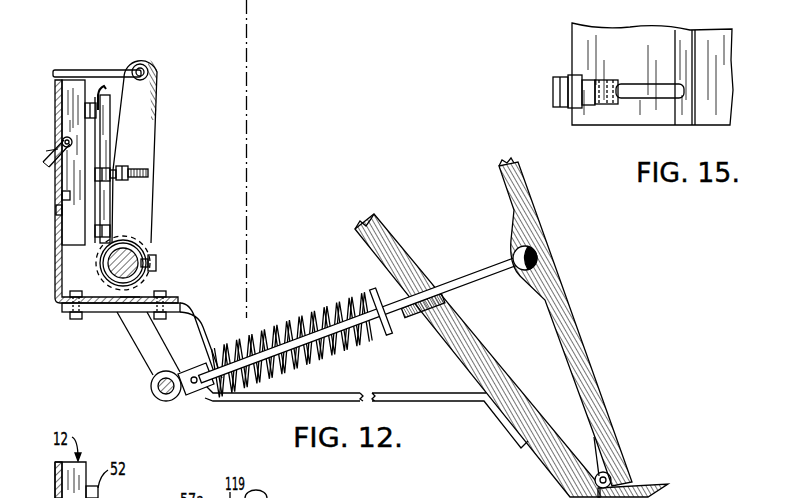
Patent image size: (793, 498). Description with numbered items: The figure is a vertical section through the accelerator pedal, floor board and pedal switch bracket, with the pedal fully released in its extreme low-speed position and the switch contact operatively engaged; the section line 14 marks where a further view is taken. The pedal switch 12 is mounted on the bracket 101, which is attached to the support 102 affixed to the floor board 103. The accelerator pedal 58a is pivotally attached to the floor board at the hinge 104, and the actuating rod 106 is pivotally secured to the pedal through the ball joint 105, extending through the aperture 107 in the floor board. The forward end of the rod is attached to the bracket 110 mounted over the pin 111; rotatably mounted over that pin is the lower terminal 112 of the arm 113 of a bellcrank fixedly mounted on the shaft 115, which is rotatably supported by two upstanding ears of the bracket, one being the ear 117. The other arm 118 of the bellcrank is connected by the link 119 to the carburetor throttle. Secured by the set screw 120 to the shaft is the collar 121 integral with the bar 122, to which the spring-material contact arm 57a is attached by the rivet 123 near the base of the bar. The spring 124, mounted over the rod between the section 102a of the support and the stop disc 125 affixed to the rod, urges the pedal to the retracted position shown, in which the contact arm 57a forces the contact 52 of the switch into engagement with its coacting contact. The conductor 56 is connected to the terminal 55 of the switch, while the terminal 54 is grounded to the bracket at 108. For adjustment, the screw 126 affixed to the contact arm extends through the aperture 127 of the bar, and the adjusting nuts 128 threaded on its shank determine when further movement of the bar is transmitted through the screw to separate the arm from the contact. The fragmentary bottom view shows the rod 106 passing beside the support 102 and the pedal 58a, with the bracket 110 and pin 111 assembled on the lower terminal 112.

In FIG. 12, the section line 14 is at (260, 18).
In FIG. 12, the pedal switch 12 is at (89, 92).
In FIG. 12, the contact 52 is at (86, 110).
In FIG. 12, the terminal 54 is at (62, 195).
In FIG. 12, the terminal 55 is at (62, 141).
In FIG. 12, the conductor 56 is at (44, 162).
In FIG. 12, the contact arm 57a is at (103, 93).
In FIG. 12, the accelerator pedal 58a is at (527, 191).
In FIG. 15, the accelerator pedal 58a is at (685, 77).
In FIG. 12, the bracket 101 is at (55, 284).
In FIG. 12, the support 102 is at (108, 314).
In FIG. 15, the support 102 is at (580, 66).
In FIG. 12, the section of the support 102a is at (198, 328).
In FIG. 12, the floor board 103 is at (399, 240).
In FIG. 12, the hinge 104 is at (637, 487).
In FIG. 12, the ball joint 105 is at (531, 250).
In FIG. 12, the actuating rod 106 is at (441, 281).
In FIG. 15, the actuating rod 106 is at (654, 84).
In FIG. 12, the aperture 107 is at (448, 313).
In FIG. 12, the grounding point 108 is at (57, 212).
In FIG. 12, the bracket 110 is at (197, 393).
In FIG. 15, the bracket 110 is at (610, 106).
In FIG. 12, the pin 111 is at (158, 388).
In FIG. 15, the pin 111 is at (573, 108).
In FIG. 12, the lower terminal 112 is at (152, 381).
In FIG. 15, the lower terminal 112 is at (553, 84).
In FIG. 12, the arm 113 is at (138, 355).
In FIG. 12, the shaft 115 is at (140, 254).
In FIG. 12, the upstanding ear 117 is at (148, 276).
In FIG. 12, the arm 118 is at (155, 94).
In FIG. 12, the link 119 is at (60, 70).
In FIG. 12, the set screw 120 is at (157, 262).
In FIG. 12, the collar 121 is at (148, 294).
In FIG. 12, the bar 122 is at (105, 137).
In FIG. 12, the rivet 123 is at (108, 232).
In FIG. 12, the spring 124 is at (269, 333).
In FIG. 12, the stop disc 125 is at (378, 290).
In FIG. 12, the screw 126 is at (146, 168).
In FIG. 12, the aperture 127 is at (106, 182).
In FIG. 12, the adjusting nuts 128 is at (128, 178).